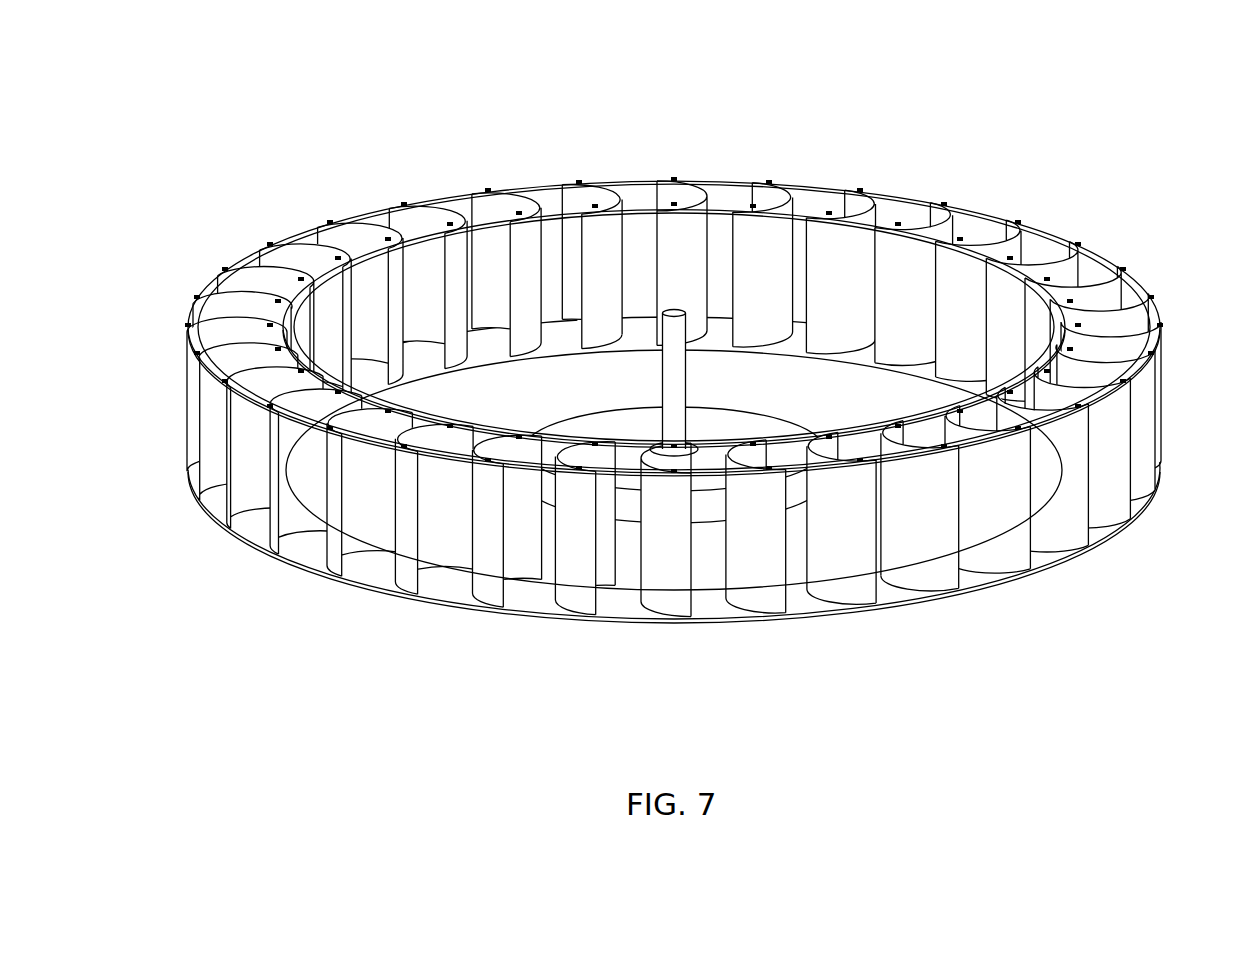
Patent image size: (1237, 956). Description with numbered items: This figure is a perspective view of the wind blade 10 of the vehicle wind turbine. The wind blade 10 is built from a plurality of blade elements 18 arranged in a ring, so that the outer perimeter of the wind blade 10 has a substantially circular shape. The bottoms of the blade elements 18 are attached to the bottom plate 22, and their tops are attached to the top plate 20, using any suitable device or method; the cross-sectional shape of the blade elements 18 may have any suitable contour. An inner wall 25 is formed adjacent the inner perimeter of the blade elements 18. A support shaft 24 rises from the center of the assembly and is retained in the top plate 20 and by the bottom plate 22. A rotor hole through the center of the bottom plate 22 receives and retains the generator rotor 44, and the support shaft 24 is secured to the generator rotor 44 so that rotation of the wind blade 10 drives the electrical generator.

The wind blade 10 is at (704, 379).
The blade elements 18 is at (620, 223).
The top plate 20 is at (1097, 258).
The bottom plate 22 is at (1003, 583).
The support shaft 24 is at (676, 314).
The inner wall 25 is at (808, 221).
The generator rotor 44 is at (590, 412).